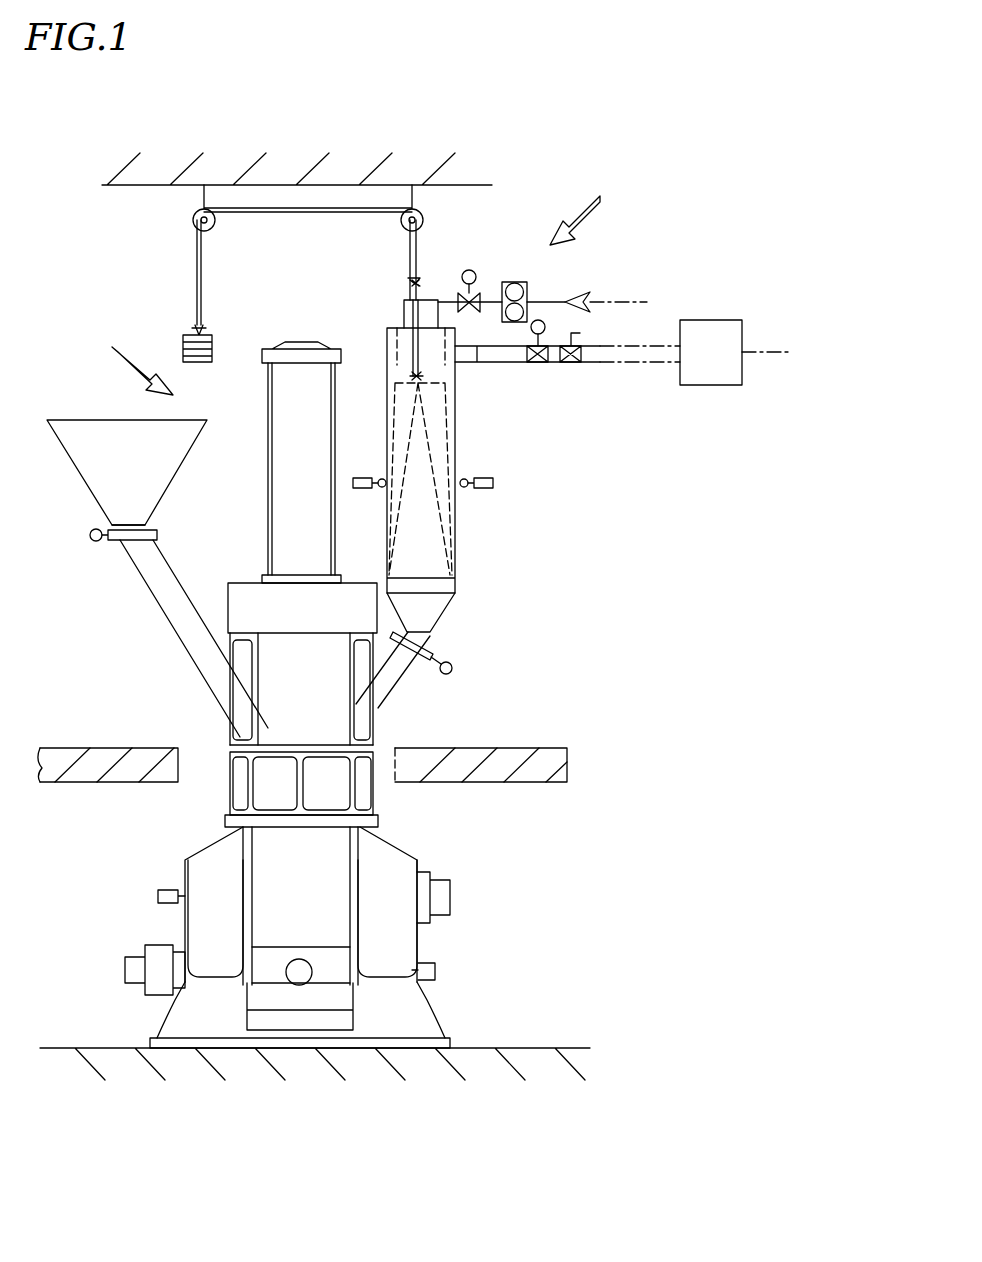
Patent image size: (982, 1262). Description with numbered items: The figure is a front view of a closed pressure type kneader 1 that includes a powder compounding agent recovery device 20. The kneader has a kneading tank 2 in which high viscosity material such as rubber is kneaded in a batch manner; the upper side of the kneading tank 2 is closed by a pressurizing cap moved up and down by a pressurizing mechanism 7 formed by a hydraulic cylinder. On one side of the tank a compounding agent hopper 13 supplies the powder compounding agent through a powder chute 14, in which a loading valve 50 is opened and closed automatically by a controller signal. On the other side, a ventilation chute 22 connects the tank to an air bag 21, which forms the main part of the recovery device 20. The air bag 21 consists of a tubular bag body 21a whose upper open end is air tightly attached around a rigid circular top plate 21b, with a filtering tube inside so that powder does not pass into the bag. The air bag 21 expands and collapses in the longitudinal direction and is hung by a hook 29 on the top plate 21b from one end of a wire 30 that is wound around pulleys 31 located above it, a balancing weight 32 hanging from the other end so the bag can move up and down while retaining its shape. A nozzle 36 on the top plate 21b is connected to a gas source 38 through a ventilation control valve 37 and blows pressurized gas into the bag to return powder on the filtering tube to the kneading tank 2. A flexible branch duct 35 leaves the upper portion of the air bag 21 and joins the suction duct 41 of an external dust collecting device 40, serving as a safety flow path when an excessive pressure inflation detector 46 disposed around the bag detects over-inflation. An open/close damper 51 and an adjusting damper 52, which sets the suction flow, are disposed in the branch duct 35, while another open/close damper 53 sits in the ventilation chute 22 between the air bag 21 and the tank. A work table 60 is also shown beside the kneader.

The closed pressure type kneader 1 is at (129, 361).
The kneading tank 2 is at (400, 838).
The pressurizing mechanism 7 is at (270, 480).
The compounding agent hopper 13 is at (80, 463).
The powder chute 14 is at (182, 636).
The powder compounding agent recovery device 20 is at (542, 239).
The air bag 21 is at (552, 481).
The bag body 21a is at (457, 510).
The top plate 21b is at (387, 326).
The ventilation chute 22 is at (402, 686).
The hook 29 is at (410, 280).
The wire 30 is at (272, 208).
The pulleys 31 is at (193, 220).
The balancing weight 32 is at (194, 328).
The branch duct 35 is at (496, 364).
The nozzle 36 is at (400, 303).
The ventilation control valve 37 is at (470, 270).
The gas source 38 is at (515, 282).
The dust collecting device 40 is at (710, 320).
The suction duct 41 is at (650, 364).
The excessive pressure inflation detector 46 is at (493, 485).
The loading valve 50 is at (122, 540).
The open/close damper 51 is at (540, 364).
The adjusting damper 52 is at (572, 364).
The open/close damper 53 is at (440, 652).
The work table 60 is at (538, 750).